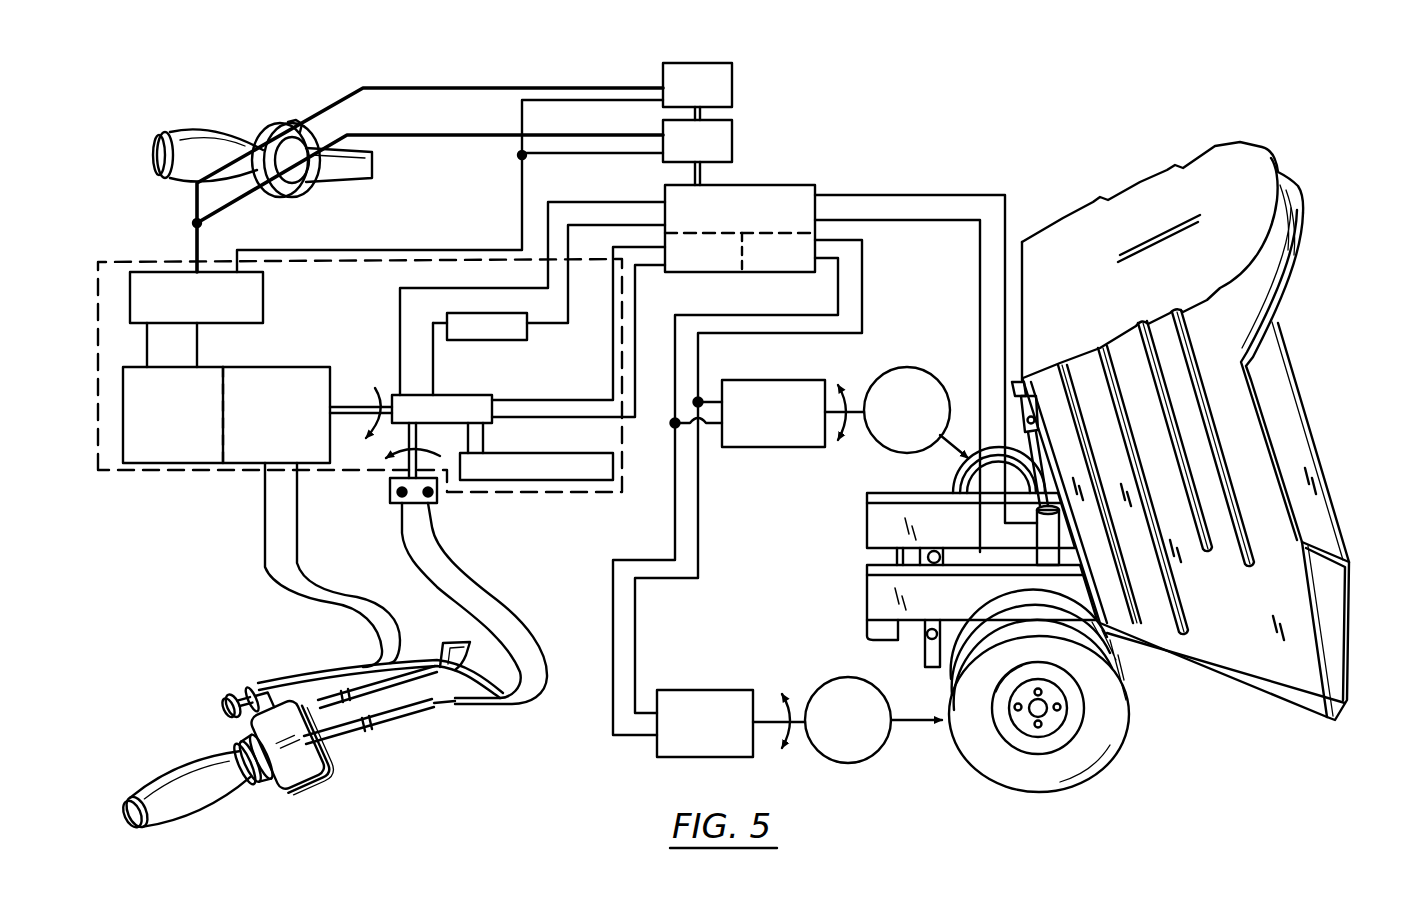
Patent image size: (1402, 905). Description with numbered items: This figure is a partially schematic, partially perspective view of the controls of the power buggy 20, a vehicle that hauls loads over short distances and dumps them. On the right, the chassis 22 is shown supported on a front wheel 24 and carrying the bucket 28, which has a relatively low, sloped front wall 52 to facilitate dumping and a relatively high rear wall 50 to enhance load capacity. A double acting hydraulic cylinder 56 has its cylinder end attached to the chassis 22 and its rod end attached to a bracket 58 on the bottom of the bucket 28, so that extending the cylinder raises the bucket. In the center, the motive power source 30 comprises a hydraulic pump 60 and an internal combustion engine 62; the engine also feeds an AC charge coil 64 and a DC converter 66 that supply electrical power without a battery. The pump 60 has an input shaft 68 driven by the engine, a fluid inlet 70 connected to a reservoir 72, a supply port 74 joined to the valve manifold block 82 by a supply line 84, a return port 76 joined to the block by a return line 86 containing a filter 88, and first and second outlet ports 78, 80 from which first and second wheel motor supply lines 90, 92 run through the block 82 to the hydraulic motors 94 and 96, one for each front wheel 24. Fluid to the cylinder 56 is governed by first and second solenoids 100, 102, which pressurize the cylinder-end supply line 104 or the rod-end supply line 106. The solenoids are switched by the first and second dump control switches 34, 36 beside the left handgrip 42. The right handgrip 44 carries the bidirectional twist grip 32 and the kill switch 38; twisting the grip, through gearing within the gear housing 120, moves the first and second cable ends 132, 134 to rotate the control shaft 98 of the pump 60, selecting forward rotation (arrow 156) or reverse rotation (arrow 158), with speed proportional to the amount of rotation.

The power buggy 20 is at (1128, 85).
The chassis 22 is at (870, 525).
The front wheels 24 is at (1108, 744).
The dumpable article support 28 is at (1277, 396).
The motive power source 30 is at (157, 478).
The bidirectional twist grip 32 is at (215, 808).
The first dump control switch 34 is at (294, 126).
The second dump control switch 36 is at (280, 186).
The kill switch 38 is at (232, 696).
The left handgrip 42 is at (200, 148).
The right handgrip 44 is at (158, 786).
The rear wall 50 is at (1140, 232).
The front wall 52 is at (1332, 590).
The double acting hydraulic cylinder 56 is at (1040, 540).
The bracket 58 is at (1024, 394).
The hydraulic pump 60 is at (470, 395).
The internal combustion engine 62 is at (290, 367).
The AC charge coil 64 is at (200, 465).
The DC converter 66 is at (147, 272).
The input shaft 68 is at (345, 405).
The fluid inlet 70 is at (486, 452).
The reservoir 72 is at (550, 480).
The supply port 74 is at (382, 384).
The return port 76 is at (448, 395).
The first fluid outlet port 78 is at (492, 400).
The second fluid outlet port 80 is at (497, 419).
The valve manifold block 82 is at (795, 185).
The supply line 84 is at (605, 202).
The return line 86 is at (552, 323).
The filter 88 is at (498, 312).
The first wheel motor supply line 90 is at (613, 350).
The second wheel motor supply line 92 is at (635, 388).
The hydraulic motor 94 is at (806, 350).
The hydraulic motor 96 is at (752, 660).
The control shaft 98 is at (384, 462).
The first solenoid 100 is at (732, 80).
The second solenoid 102 is at (732, 130).
The supply line 104 is at (860, 195).
The supply line 106 is at (940, 220).
The gear housing 120 is at (322, 758).
The first end of cable 132 is at (406, 568).
The second end of cable 134 is at (470, 565).
The arrow 156 is at (222, 775).
The arrow 158 is at (178, 758).